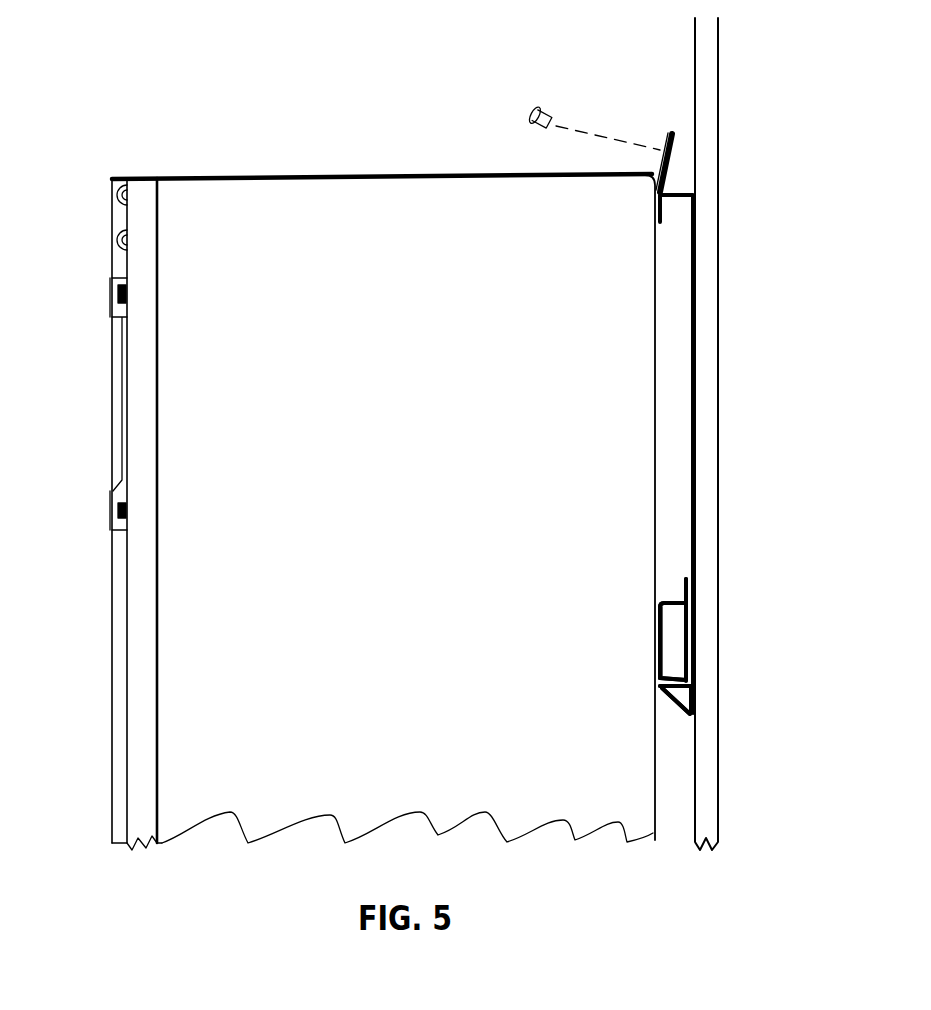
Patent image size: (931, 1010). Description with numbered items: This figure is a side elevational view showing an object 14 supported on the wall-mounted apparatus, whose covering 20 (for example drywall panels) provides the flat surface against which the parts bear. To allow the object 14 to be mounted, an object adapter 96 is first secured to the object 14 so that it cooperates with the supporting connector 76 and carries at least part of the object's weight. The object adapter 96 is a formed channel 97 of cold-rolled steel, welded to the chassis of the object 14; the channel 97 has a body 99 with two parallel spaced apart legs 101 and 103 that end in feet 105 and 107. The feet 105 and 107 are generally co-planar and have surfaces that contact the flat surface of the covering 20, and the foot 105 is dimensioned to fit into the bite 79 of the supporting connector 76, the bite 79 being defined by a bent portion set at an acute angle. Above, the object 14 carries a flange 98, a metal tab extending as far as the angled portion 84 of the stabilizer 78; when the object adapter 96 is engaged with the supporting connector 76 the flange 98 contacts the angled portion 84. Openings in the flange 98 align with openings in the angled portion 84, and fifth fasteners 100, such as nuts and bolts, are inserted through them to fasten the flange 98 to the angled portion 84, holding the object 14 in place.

The object 14 is at (154, 146).
The covering 20 is at (708, 127).
The supporting connector 76 is at (674, 724).
The stabilizer 78 is at (673, 210).
The bite 79 is at (677, 697).
The angled portion 84 is at (676, 156).
The object adapter 96 is at (670, 640).
The channel 97 is at (664, 642).
The flange 98 is at (662, 147).
The body 99 is at (660, 623).
The fifth fasteners 100 is at (543, 105).
The leg 101 is at (670, 675).
The leg 103 is at (672, 597).
The foot 105 is at (688, 693).
The foot 107 is at (688, 584).